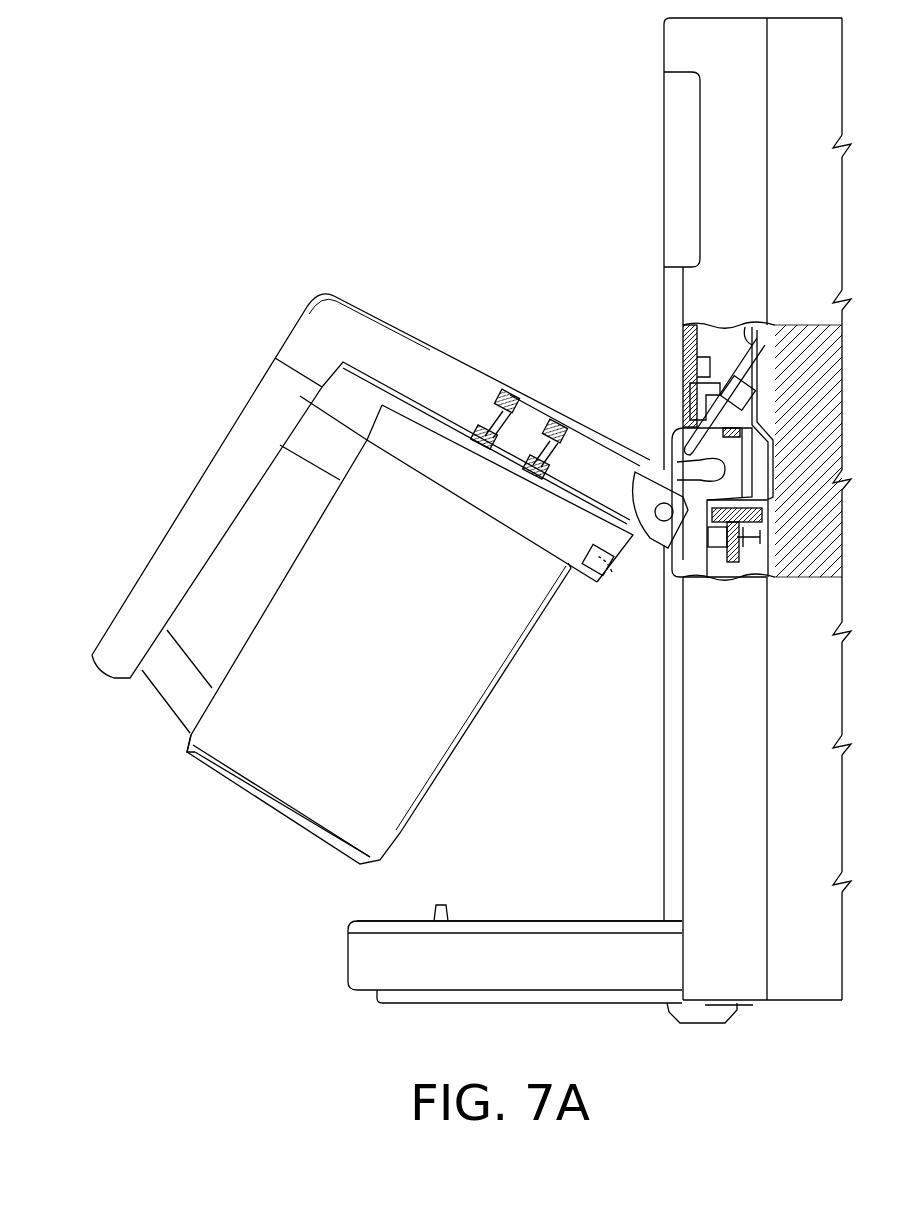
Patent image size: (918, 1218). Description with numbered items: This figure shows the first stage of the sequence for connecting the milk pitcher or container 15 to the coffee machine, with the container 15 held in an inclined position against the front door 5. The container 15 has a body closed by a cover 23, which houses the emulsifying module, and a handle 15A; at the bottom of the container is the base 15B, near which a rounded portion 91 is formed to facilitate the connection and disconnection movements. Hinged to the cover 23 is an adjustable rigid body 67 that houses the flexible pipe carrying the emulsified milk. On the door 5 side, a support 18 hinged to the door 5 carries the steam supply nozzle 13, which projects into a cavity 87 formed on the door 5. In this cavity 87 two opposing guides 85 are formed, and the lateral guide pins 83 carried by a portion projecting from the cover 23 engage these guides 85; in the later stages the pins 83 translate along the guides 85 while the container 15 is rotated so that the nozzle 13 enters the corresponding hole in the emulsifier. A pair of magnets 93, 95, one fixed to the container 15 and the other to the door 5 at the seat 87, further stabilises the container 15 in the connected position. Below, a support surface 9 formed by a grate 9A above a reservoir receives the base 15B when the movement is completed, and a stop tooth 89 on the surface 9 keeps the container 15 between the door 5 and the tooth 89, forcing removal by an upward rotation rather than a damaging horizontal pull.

The front door 5 is at (663, 213).
The rigid body 67 is at (362, 318).
The cover 23 is at (489, 398).
The support 18 is at (715, 400).
The cavity 87 is at (648, 456).
The steam supply nozzle 13 is at (688, 450).
The guides 85 is at (722, 470).
The handle 15A is at (232, 478).
The guide pins 83 is at (664, 521).
The magnet 93 is at (606, 578).
The magnet 95 is at (718, 545).
The rounded portion 91 is at (187, 748).
The container 15 is at (470, 764).
The base 15B is at (295, 835).
The stop tooth 89 is at (448, 918).
The grate 9A is at (532, 911).
The support surface 9 is at (604, 902).